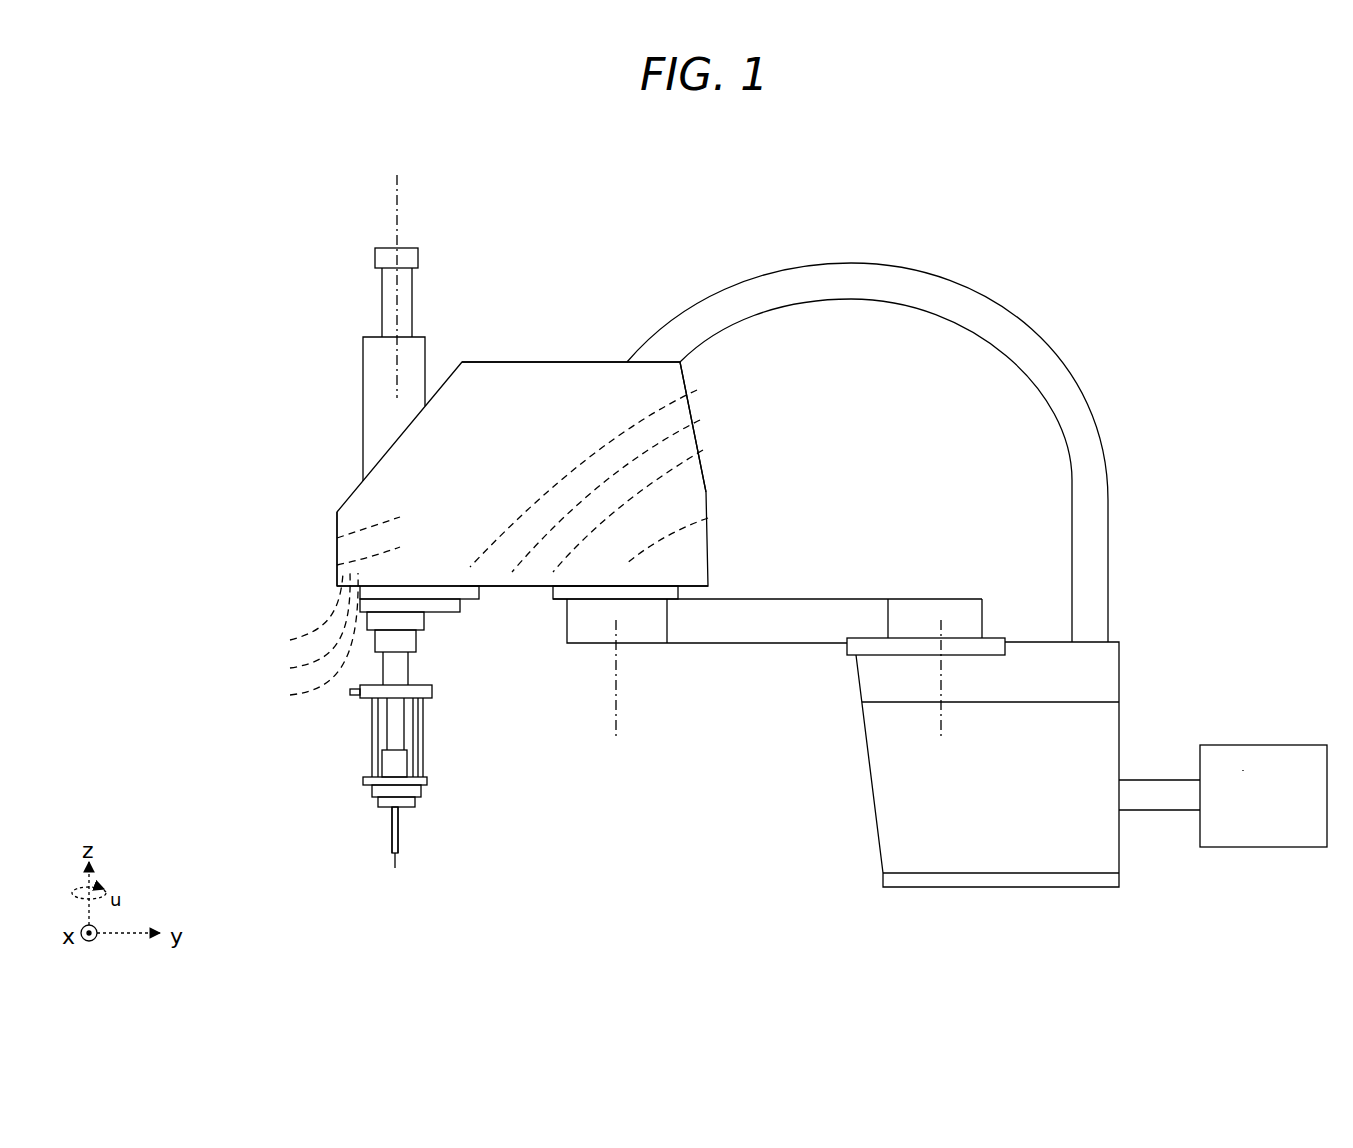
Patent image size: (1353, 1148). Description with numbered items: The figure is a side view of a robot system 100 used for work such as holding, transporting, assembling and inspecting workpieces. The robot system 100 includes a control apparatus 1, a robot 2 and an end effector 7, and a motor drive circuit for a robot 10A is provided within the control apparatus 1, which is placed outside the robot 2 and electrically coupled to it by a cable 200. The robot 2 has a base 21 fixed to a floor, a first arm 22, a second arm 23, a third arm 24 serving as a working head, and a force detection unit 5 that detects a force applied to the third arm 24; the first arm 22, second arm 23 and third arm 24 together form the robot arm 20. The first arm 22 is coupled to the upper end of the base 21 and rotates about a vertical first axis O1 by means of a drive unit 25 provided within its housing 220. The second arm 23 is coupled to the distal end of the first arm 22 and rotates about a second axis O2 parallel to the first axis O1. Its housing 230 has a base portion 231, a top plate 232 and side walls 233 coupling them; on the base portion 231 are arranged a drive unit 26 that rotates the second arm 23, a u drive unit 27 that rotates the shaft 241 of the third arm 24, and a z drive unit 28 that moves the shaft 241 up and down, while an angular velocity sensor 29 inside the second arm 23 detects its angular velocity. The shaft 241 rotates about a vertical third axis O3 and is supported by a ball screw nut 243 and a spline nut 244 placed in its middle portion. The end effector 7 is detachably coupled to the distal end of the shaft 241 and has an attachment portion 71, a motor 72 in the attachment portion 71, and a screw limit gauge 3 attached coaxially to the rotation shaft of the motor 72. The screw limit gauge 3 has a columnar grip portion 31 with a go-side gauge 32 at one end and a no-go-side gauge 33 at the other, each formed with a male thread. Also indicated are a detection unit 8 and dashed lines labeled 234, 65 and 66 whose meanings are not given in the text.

The robot system 100 is at (1040, 195).
The robot arm 20 is at (790, 168).
The base 21 is at (993, 812).
The first arm 22 is at (715, 612).
The housing 220 is at (862, 612).
The drive unit 25 is at (948, 620).
The first axis O1 is at (940, 728).
The second axis O2 is at (612, 683).
The third axis O3 is at (398, 187).
The robot 2 is at (637, 233).
The second arm 23 is at (460, 437).
The housing 230 is at (510, 355).
The base portion 231 is at (522, 587).
The top plate 232 is at (583, 362).
The side walls 233 is at (332, 526).
The opening 234 is at (333, 575).
The third arm 24 is at (340, 303).
The shaft 241 is at (380, 318).
The ball screw nut 243 is at (337, 538).
The spline nut 244 is at (337, 565).
The drive unit 26 is at (708, 518).
The u drive unit 27 is at (703, 450).
The z drive unit 28 is at (700, 420).
The angular velocity sensor 29 is at (697, 390).
The force detection unit 5 is at (390, 498).
The end effector 7 is at (457, 695).
The attachment portion 71 is at (450, 778).
The motor 72 is at (395, 765).
The screw limit gauge 3 is at (398, 851).
The grip portion 31 is at (392, 840).
The go-side gauge 32 is at (392, 860).
The no-go-side gauge 33 is at (400, 830).
The detection unit 8 is at (305, 614).
The tube 65 is at (302, 629).
The tube 66 is at (306, 643).
The control apparatus 1 is at (1302, 740).
The motor drive circuit for a robot 10A is at (1243, 770).
The cable 200 is at (1160, 812).